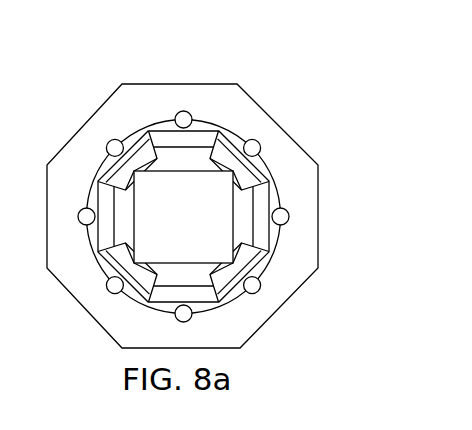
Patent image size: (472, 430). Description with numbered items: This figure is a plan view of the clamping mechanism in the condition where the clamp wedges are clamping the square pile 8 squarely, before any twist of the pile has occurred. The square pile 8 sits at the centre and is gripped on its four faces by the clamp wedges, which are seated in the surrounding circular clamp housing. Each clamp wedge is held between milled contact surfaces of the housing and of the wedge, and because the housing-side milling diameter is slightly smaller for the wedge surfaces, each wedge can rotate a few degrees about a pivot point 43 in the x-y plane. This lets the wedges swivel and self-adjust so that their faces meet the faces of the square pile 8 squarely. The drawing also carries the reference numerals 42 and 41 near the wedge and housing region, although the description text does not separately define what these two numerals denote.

The square pile 8 is at (246, 216).
The pivot point 43 is at (250, 216).
The clamp body ring 42 is at (238, 217).
The wedge element 41 is at (235, 254).